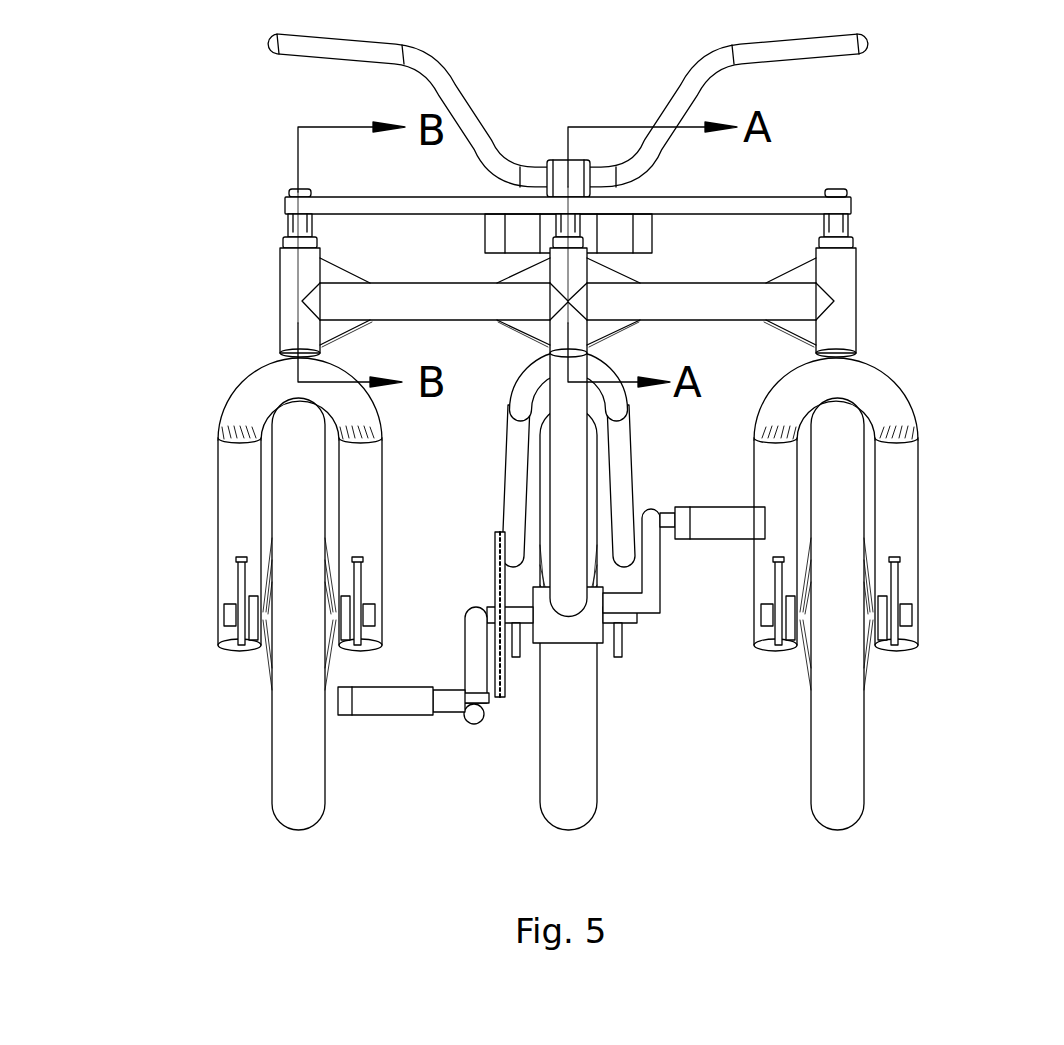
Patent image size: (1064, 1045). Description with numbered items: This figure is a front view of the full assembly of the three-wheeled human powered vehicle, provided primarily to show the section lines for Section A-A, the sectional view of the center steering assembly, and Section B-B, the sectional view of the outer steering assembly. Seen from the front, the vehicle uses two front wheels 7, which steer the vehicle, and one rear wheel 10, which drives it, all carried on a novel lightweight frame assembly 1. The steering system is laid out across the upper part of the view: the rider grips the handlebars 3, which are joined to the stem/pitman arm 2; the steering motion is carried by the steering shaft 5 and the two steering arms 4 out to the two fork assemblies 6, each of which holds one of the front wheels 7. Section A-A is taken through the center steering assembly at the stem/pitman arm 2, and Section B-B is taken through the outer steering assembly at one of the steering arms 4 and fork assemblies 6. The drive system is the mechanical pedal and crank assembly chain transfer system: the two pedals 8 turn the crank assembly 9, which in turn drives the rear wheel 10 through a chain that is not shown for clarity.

The Frame Assembly 1 is at (288, 297).
The Stem/Pitman Arm 2 is at (557, 158).
The Handlebars 3 is at (345, 46).
The Steering Arms 4 is at (848, 225).
The Steering Shaft 5 is at (713, 202).
The Fork Assemblies 6 is at (870, 388).
The Front Wheels 7 is at (835, 592).
The Pedals 8 is at (372, 703).
The Crank Assembly 9 is at (651, 578).
The Rear Wheel 10 is at (565, 745).